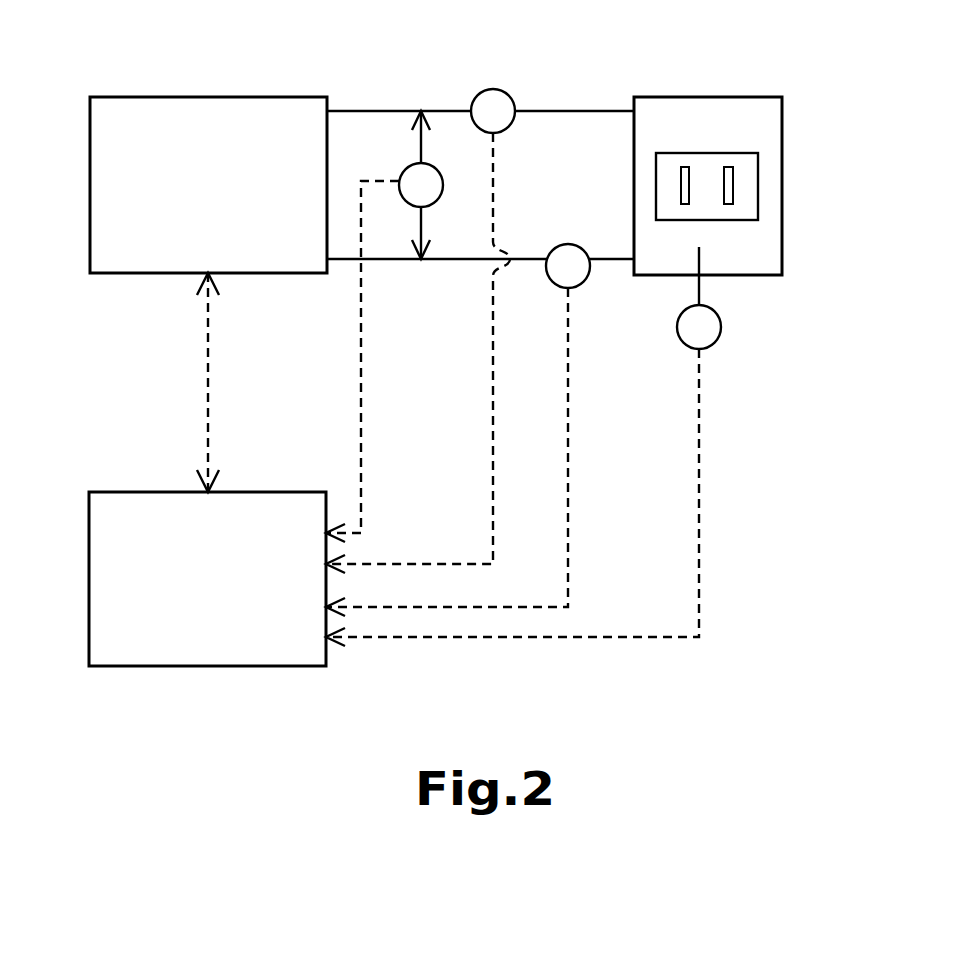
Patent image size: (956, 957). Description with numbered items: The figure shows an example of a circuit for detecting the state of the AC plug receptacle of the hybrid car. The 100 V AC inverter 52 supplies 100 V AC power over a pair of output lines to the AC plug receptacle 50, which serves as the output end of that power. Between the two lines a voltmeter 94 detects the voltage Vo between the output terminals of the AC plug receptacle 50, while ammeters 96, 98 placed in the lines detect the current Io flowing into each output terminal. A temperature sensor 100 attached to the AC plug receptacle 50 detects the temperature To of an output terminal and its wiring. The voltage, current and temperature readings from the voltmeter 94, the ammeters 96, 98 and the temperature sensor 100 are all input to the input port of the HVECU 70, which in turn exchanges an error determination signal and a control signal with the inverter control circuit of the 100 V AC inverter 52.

The AC plug receptacle 50 is at (708, 97).
The 100 V AC inverter 52 is at (208, 97).
The HVECU 70 is at (133, 492).
The voltmeter 94 is at (409, 167).
The ammeter 96 is at (509, 96).
The ammeter 98 is at (568, 244).
The temperature sensor 100 is at (721, 328).